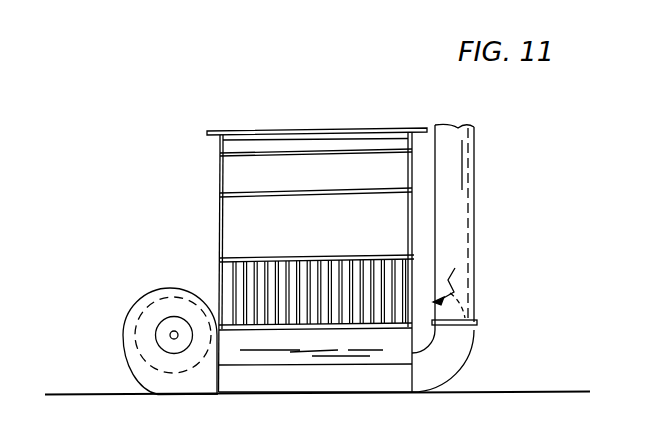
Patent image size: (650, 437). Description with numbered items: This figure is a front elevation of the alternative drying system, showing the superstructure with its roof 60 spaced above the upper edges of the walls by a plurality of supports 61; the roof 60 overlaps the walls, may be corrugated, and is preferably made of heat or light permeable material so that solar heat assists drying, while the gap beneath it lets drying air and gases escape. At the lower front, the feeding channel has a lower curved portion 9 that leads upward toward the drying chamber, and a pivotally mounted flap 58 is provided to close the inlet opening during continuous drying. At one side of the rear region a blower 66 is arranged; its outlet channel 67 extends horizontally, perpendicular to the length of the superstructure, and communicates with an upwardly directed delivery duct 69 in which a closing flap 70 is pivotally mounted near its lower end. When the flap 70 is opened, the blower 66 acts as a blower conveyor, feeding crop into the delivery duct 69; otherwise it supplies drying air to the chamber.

The lower curved portion 9 is at (296, 357).
The pivotally mounted flap 58 is at (238, 217).
The roof 60 is at (314, 112).
The supports 61 is at (219, 144).
The blower 66 is at (133, 322).
The outlet channel 67 is at (208, 393).
The delivery duct 69 is at (457, 170).
The closing flap 70 is at (450, 281).